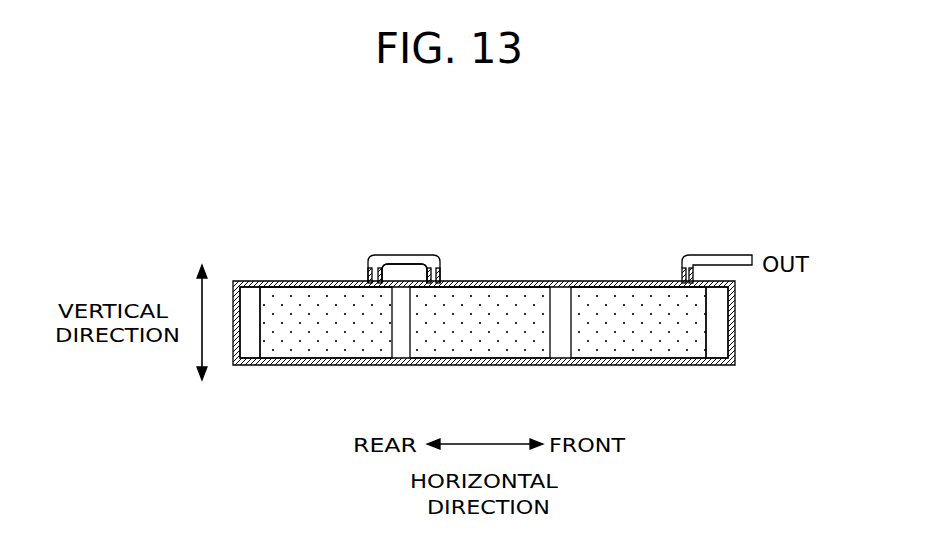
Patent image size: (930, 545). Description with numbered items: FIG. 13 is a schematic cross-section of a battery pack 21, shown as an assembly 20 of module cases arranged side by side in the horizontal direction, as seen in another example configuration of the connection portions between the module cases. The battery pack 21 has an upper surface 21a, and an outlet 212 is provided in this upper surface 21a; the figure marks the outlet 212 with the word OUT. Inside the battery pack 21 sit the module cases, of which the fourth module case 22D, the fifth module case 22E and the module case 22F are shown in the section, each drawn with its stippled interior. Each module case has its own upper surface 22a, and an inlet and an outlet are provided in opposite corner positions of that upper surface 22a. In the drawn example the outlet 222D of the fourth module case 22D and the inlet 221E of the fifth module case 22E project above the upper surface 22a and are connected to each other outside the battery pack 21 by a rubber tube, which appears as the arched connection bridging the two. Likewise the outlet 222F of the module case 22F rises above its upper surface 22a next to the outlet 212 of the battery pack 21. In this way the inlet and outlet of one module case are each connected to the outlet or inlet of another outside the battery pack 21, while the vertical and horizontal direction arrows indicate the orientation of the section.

The battery module 20 is at (506, 278).
The battery pack 21 is at (562, 281).
The upper surface 21a is at (272, 280).
The upper surface 22a is at (322, 280).
The fourth module case 22D is at (314, 345).
The fifth module case 22E is at (481, 345).
The module case 22F is at (645, 345).
The outlet 222D is at (362, 268).
The inlet 221E is at (448, 268).
The outlet 222F is at (676, 276).
The outlet 212 is at (728, 256).